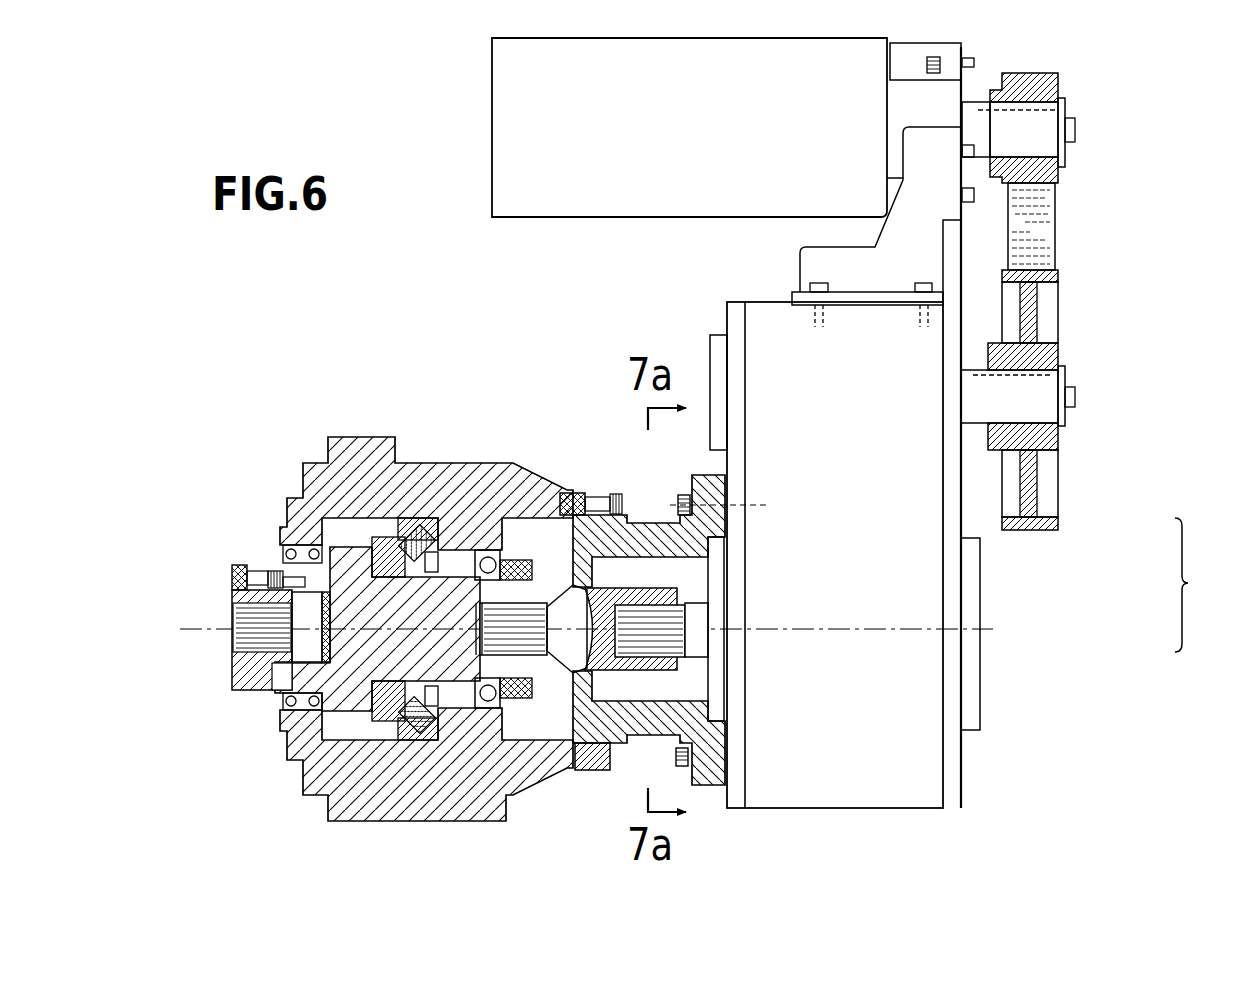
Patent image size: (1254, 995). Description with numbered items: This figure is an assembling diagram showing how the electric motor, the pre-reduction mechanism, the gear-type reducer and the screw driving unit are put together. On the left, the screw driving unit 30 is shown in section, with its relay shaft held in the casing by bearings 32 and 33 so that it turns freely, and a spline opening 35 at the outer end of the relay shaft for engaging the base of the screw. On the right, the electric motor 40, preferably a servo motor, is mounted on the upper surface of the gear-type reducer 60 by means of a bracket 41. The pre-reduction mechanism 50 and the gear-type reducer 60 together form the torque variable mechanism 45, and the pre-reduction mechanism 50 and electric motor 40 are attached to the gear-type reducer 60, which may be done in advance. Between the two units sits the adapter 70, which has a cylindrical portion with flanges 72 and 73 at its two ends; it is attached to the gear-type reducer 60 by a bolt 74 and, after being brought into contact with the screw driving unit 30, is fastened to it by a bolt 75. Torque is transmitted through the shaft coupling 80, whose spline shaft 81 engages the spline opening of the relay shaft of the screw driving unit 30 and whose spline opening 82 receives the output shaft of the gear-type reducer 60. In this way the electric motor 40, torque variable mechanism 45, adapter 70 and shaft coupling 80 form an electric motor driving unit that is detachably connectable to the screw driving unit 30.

The screw driving unit 30 is at (330, 418).
The bearing 32 is at (410, 720).
The bearing 33 is at (498, 700).
The spline opening 35 is at (235, 637).
The electric motor 40 is at (465, 124).
The bracket 41 is at (838, 262).
The torque variable mechanism 45 is at (1203, 585).
The pre-reduction mechanism 50 is at (1116, 470).
The gear-type reducer 60 is at (1045, 653).
The adapter 70 is at (645, 505).
The flange 72 is at (595, 772).
The flange 73 is at (708, 790).
The bolt 74 is at (677, 492).
The bolt 75 is at (618, 492).
The shaft coupling 80 is at (562, 615).
The spline shaft 81 is at (536, 656).
The spline opening 82 is at (667, 623).